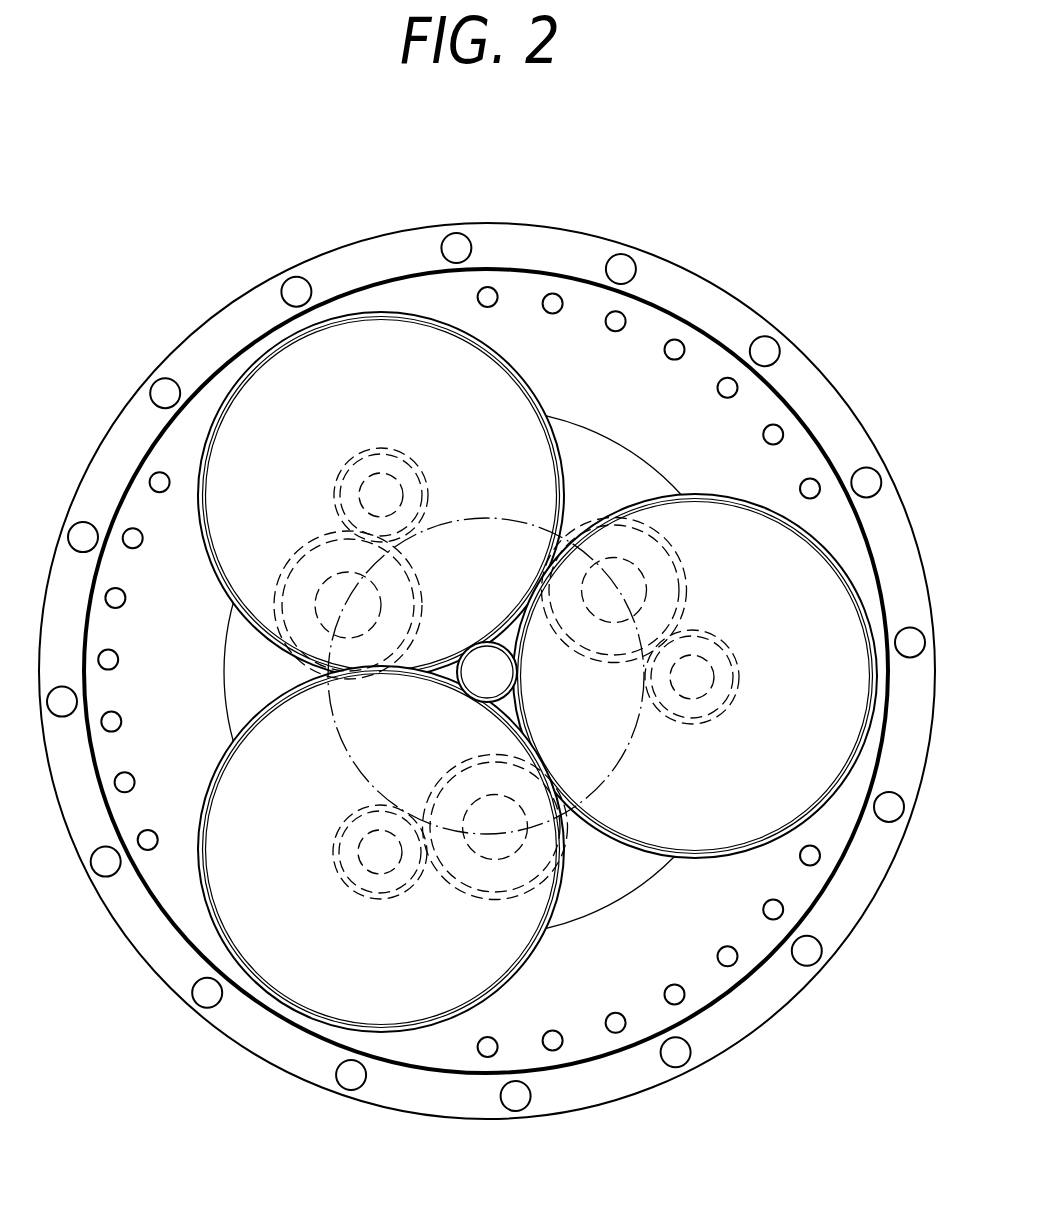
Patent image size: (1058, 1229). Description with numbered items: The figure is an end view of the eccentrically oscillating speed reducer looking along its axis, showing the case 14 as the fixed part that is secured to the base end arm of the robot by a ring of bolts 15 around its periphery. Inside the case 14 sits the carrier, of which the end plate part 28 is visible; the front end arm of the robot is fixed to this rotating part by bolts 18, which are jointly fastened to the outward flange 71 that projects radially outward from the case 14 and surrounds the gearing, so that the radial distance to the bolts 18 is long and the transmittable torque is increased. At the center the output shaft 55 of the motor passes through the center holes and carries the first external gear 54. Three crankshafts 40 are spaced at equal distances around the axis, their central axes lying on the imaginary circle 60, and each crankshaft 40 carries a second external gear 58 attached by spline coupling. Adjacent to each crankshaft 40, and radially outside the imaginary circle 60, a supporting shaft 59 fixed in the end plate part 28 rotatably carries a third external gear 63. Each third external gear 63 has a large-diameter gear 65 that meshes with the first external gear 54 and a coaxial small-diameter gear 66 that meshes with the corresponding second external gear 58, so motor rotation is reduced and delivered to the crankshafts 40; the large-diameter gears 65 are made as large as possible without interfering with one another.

The case 14 is at (705, 312).
The bolts 15 is at (625, 272).
The bolts 18 is at (668, 986).
The end plate part 28 is at (610, 462).
The crankshafts 40 is at (646, 579).
The first external gear 54 is at (520, 660).
The output shaft 55 is at (484, 677).
The second external gears 58 is at (688, 597).
The supporting shafts 59 is at (400, 486).
The imaginary circle 60 is at (602, 783).
The third external gears 63 is at (210, 560).
The large-diameter gears 65 is at (262, 626).
The small-diameter gears 66 is at (362, 450).
The outward flange 71 is at (427, 293).